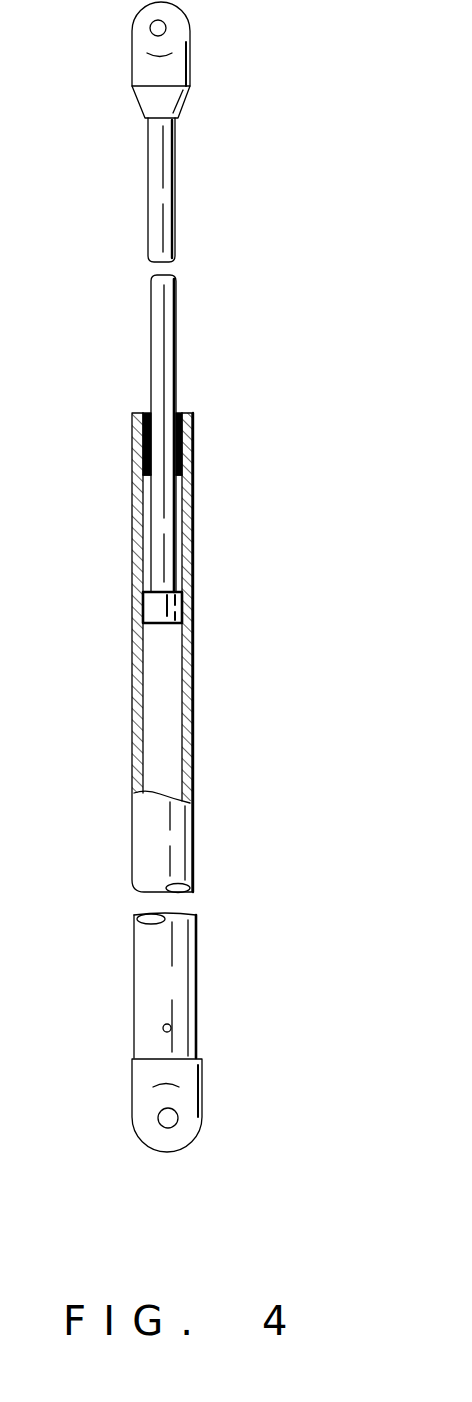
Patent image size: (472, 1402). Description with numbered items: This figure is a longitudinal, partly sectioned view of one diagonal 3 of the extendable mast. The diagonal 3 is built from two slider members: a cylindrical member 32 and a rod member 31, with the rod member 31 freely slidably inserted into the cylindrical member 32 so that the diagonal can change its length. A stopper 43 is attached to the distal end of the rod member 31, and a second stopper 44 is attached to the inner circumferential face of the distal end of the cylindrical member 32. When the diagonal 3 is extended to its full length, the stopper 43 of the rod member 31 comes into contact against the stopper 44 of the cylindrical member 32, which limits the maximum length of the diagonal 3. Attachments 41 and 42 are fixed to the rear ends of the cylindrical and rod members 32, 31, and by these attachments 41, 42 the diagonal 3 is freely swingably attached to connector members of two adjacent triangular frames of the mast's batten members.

The diagonal 3 is at (299, 426).
The rod member 31 is at (176, 316).
The cylindrical member 32 is at (195, 717).
The attachment 41 is at (189, 76).
The attachment 42 is at (203, 1115).
The stopper 43 is at (183, 611).
The stopper 44 is at (183, 425).